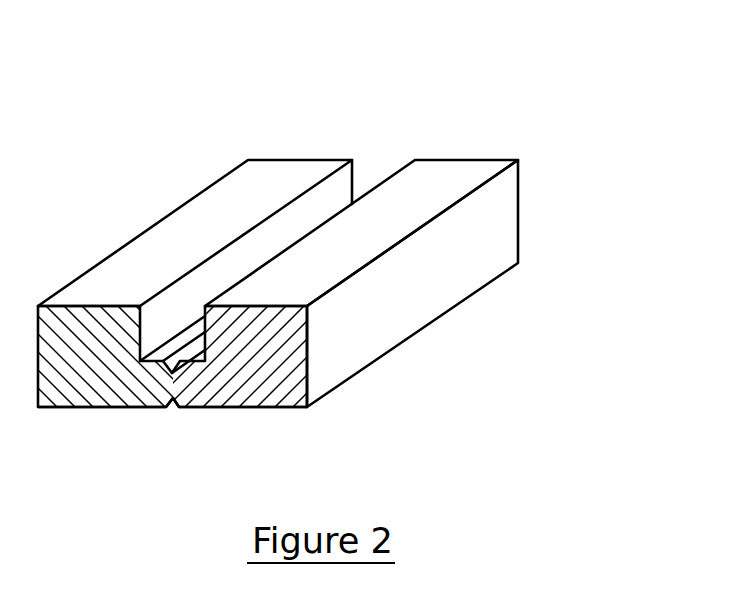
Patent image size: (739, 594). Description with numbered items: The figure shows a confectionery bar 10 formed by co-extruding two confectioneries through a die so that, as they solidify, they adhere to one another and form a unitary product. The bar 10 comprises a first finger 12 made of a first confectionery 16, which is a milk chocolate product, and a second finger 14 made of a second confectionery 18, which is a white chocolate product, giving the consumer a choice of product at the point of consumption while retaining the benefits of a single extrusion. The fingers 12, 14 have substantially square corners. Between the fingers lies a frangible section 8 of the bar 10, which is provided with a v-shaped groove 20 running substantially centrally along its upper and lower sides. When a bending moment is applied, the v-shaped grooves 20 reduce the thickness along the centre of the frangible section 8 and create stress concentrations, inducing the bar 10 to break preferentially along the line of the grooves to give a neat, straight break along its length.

The confectionery bar 10 is at (330, 294).
The first finger 12 is at (288, 182).
The second finger 14 is at (443, 182).
The first confectionery 16 is at (60, 385).
The second confectionery 18 is at (295, 373).
The frangible section 8 is at (135, 407).
The v-shaped groove 20 is at (173, 400).